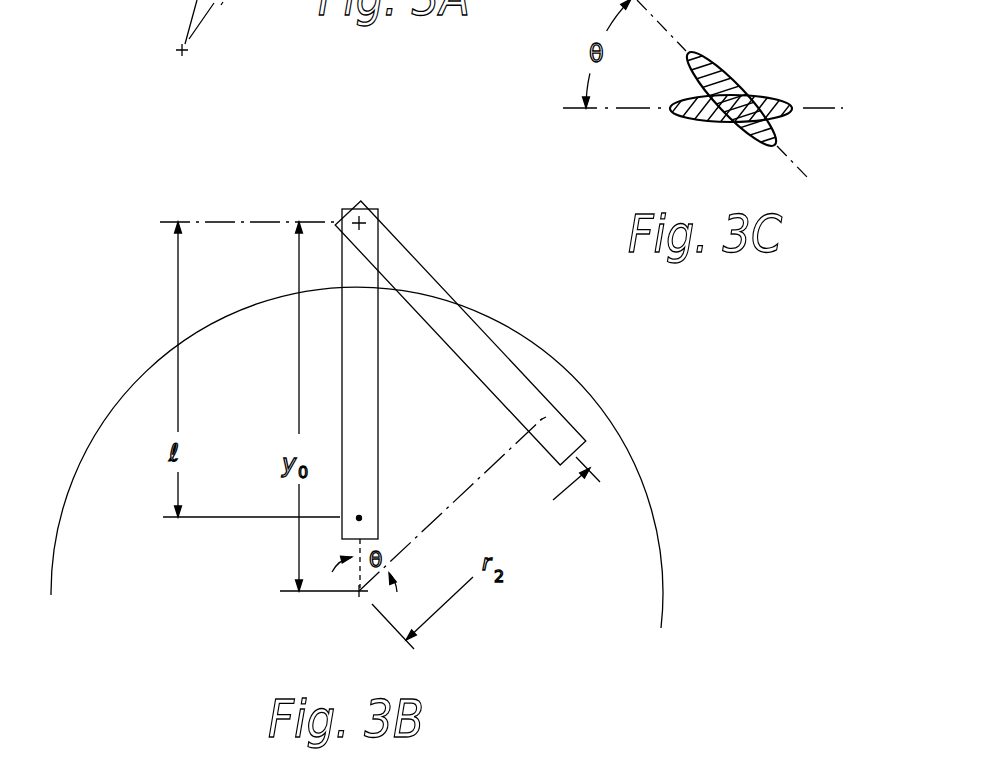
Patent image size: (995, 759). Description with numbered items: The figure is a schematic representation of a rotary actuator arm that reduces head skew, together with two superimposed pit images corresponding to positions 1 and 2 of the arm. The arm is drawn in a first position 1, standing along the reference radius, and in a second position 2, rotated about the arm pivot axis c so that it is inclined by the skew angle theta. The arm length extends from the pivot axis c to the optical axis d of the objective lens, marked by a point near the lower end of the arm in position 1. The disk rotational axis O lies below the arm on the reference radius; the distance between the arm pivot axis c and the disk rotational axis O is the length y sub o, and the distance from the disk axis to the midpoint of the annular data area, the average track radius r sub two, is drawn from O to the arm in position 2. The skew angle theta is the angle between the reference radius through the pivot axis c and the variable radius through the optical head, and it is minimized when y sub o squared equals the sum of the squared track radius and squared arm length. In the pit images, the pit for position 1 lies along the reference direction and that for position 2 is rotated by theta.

In FIG. 3B, the position 1 of rotary actuator arm 1 is at (360, 374).
In FIG. 3C, the position 1 of rotary actuator arm 1 is at (768, 96).
In FIG. 3B, the position 2 of rotary actuator arm 2 is at (460, 333).
In FIG. 3C, the position 2 of rotary actuator arm 2 is at (700, 61).
In FIG. 3B, the arm pivot axis c is at (362, 229).
In FIG. 3B, the optical axis of objective lens d is at (360, 517).
In FIG. 3B, the disk rotational axis O is at (356, 595).